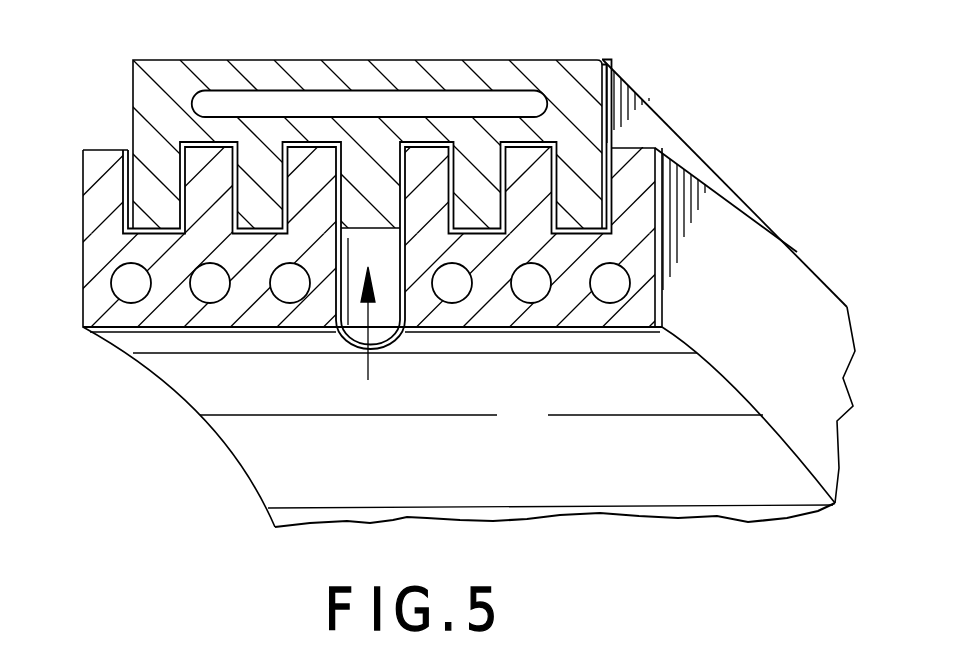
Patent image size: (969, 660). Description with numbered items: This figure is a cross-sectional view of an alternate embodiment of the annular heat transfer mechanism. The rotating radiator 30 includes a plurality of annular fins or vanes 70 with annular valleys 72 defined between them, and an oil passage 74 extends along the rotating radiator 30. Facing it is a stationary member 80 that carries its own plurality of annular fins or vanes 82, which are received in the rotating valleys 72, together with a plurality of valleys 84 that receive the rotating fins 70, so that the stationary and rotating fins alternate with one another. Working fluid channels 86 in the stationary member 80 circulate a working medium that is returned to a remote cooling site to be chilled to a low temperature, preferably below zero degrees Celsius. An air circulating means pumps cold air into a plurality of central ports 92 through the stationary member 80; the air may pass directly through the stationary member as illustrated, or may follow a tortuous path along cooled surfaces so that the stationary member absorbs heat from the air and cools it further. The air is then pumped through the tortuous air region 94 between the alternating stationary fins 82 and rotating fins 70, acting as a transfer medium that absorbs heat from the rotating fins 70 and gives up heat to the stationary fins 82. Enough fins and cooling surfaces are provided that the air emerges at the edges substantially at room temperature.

The rotating radiator 30 is at (296, 73).
The annular fins 70 is at (487, 200).
The annular valleys 72 is at (213, 140).
The oil passage 74 is at (467, 100).
The stationary member 80 is at (537, 313).
The annular fins 82 is at (487, 200).
The valleys 84 is at (254, 237).
The working fluid channels 86 is at (130, 284).
The central ports 92 is at (393, 323).
The tortuous air region 94 is at (405, 148).